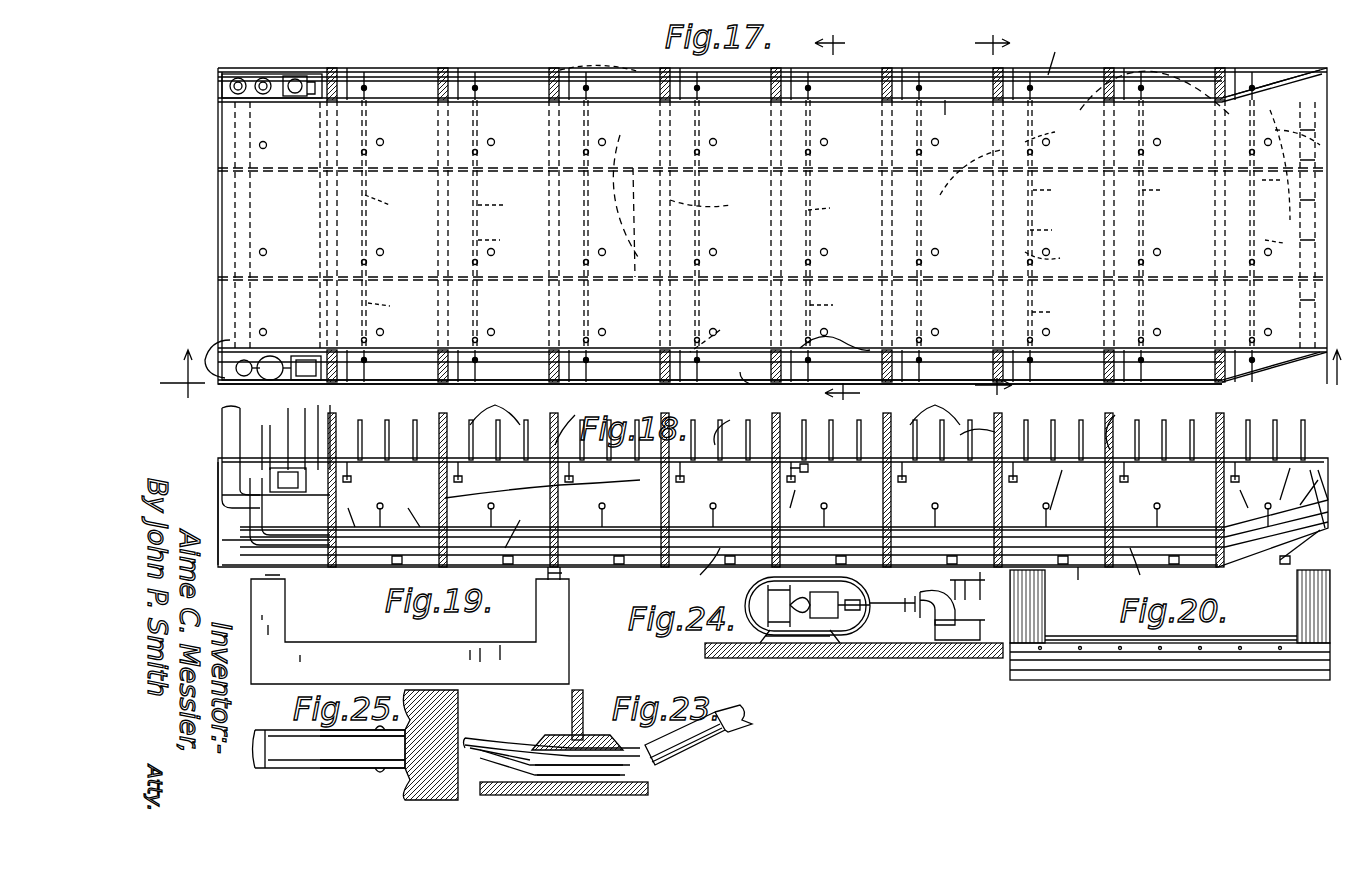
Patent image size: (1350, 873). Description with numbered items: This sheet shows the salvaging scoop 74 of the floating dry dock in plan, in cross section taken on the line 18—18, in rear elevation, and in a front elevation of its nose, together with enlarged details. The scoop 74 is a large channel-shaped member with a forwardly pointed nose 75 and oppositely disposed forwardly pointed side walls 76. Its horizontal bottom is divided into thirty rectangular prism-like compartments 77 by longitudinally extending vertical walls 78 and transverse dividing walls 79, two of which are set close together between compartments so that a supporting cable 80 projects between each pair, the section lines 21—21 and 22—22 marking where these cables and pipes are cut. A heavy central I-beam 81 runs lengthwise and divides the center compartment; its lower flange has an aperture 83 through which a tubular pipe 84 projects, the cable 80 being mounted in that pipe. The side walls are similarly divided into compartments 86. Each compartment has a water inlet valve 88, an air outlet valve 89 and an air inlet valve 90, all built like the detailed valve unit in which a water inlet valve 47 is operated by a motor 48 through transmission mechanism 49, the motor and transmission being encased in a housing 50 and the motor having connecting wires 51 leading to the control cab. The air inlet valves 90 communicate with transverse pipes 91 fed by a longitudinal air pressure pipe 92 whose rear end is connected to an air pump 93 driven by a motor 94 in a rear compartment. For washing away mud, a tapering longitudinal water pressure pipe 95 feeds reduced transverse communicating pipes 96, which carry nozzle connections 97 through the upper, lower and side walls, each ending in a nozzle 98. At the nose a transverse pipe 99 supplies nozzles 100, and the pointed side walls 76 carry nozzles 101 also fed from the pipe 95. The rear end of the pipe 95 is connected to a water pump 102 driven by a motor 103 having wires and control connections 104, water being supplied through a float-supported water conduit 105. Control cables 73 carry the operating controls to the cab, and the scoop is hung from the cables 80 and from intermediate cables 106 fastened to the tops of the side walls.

In FIG. 17, the section line 18- 18 is at (750, 377).
In FIG. 17, the section line 21- 21 is at (838, 210).
In FIG. 17, the section line 22- 22 is at (993, 208).
In FIG. 24, the water inlet valve 47 is at (935, 585).
In FIG. 24, the motor 48 is at (760, 605).
In FIG. 24, the transmission mechanism 49 is at (818, 640).
In FIG. 24, the housing 50 is at (807, 597).
In FIG. 24, the connecting wires 51 is at (748, 592).
In FIG. 18, the control cables 73 is at (262, 445).
In FIG. 17, the scoop 74 is at (510, 68).
In FIG. 18, the scoop 74 is at (603, 575).
In FIG. 19, the scoop 74 is at (338, 640).
In FIG. 20, the scoop 74 is at (1128, 683).
In FIG. 23, the scoop 74 is at (620, 795).
In FIG. 18, the forwardly pointed nose 75 is at (1276, 477).
In FIG. 20, the forwardly pointed nose 75 is at (1078, 643).
In FIG. 17, the forwardly pointed side walls 76 is at (1290, 78).
In FIG. 17, the rectangular prism-like compartments 77 is at (1150, 70).
In FIG. 17, the longitudinally extending vertical walls 78 is at (630, 219).
In FIG. 17, the transverse dividing walls 79 is at (835, 187).
In FIG. 18, the transverse dividing walls 79 is at (542, 487).
In FIG. 17, the supporting cable 80 is at (635, 75).
In FIG. 18, the supporting cable 80 is at (852, 421).
In FIG. 23, the supporting cable 80 is at (740, 732).
In FIG. 23, the I-beam 81 is at (583, 705).
In FIG. 23, the aperture 83 is at (560, 735).
In FIG. 23, the tubular pipe 84 is at (690, 757).
In FIG. 17, the side wall compartments 86 is at (954, 116).
In FIG. 18, the side wall compartments 86 is at (1063, 452).
In FIG. 18, the water inlet valves 88 is at (800, 578).
In FIG. 19, the water inlet valves 88 is at (413, 578).
In FIG. 18, the air outlet valves 89 is at (810, 468).
In FIG. 17, the air inlet valves 90 is at (1055, 192).
In FIG. 17, the transverse pipes 91 is at (834, 246).
In FIG. 17, the air pressure pipe 92 is at (1061, 52).
In FIG. 17, the air pump 93 is at (255, 78).
In FIG. 17, the motor 94 is at (297, 76).
In FIG. 17, the water pressure pipe 95 is at (759, 388).
In FIG. 18, the water pressure pipe 95 is at (515, 524).
In FIG. 17, the communicating pipes 96 is at (837, 265).
In FIG. 18, the nozzle connections 97 is at (977, 534).
In FIG. 25, the nozzle 98 is at (362, 768).
In FIG. 17, the transverse pipe 99 is at (1294, 209).
In FIG. 17, the nozzles 100 is at (1295, 165).
In FIG. 18, the nozzles 100 is at (1291, 551).
In FIG. 20, the nozzles 100 is at (1265, 640).
In FIG. 18, the nozzles 101 is at (1316, 492).
In FIG. 17, the water pump 102 is at (262, 362).
In FIG. 18, the water pump 102 is at (250, 493).
In FIG. 17, the motor 103 is at (300, 356).
In FIG. 18, the motor 103 is at (290, 492).
In FIG. 18, the wires and control connections 104 is at (330, 410).
In FIG. 17, the water conduit 105 is at (215, 333).
In FIG. 18, the water conduit 105 is at (230, 430).
In FIG. 18, the intermediate cables 106 is at (715, 406).